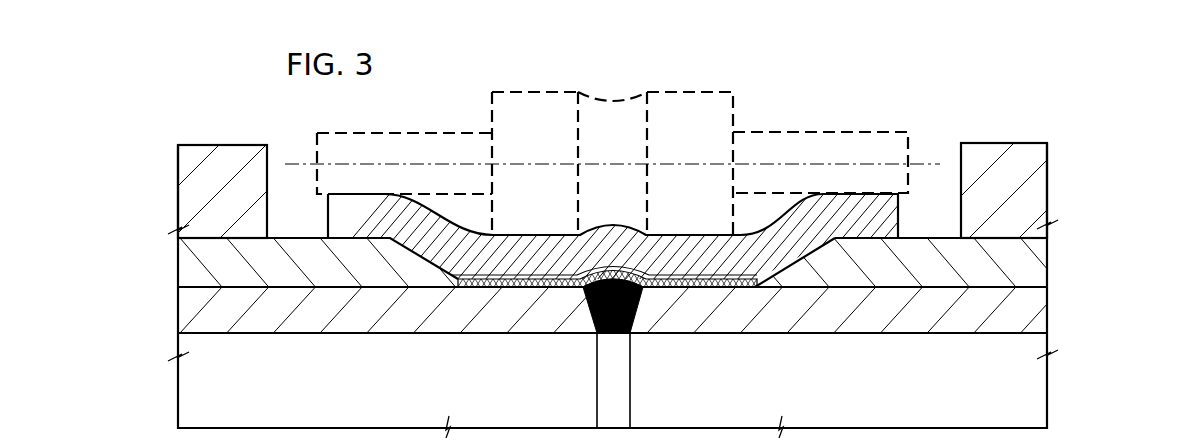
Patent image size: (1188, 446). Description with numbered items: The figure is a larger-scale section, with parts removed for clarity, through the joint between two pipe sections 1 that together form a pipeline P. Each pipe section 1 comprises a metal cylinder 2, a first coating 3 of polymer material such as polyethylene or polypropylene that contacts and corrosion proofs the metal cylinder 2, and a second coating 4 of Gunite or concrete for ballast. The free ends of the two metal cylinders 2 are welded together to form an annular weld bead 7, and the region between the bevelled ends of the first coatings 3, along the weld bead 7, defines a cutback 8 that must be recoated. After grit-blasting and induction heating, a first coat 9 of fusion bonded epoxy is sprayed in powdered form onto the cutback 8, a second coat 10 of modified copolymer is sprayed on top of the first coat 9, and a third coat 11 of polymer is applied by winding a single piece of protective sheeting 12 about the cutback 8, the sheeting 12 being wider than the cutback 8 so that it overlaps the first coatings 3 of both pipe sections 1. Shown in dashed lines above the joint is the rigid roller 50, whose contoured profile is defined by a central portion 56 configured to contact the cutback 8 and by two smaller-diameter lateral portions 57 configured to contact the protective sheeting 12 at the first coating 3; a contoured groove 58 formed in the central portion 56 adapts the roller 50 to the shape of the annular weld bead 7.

The pipe section 1 is at (414, 181).
The metal cylinder 2 is at (218, 320).
The first coating 3 is at (189, 265).
The second coating 4 is at (228, 155).
The annular weld bead 7 is at (588, 322).
The cutback 8 is at (689, 268).
The first coat 9 is at (702, 289).
The second coat 10 is at (503, 288).
The third coat 11 is at (458, 236).
The protective sheeting 12 is at (782, 236).
The roller 50 is at (612, 143).
The central portion 56 is at (713, 97).
The lateral portions 57 is at (435, 130).
The contoured groove 58 is at (603, 96).
The pipeline P is at (1090, 160).